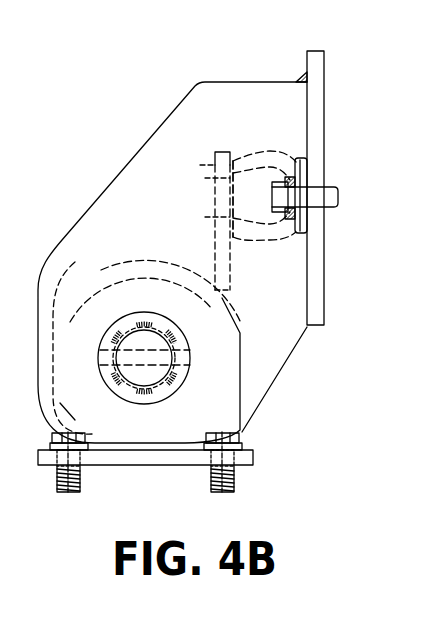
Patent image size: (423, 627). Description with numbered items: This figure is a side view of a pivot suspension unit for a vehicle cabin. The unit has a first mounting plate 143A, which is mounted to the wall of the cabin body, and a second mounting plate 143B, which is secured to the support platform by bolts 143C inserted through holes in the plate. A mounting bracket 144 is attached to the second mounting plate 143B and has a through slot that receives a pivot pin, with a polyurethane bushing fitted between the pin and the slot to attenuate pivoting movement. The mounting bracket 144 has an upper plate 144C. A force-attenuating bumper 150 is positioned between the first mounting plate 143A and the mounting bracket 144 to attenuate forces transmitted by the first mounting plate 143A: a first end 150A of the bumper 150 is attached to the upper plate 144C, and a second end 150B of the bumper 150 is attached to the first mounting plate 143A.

The first mounting plate 143A is at (324, 258).
The second mounting plate 143B is at (145, 465).
The bolts 143C is at (240, 437).
The mounting bracket 144 is at (87, 298).
The upper plate 144C is at (215, 150).
The force-attenuating bumper 150 is at (253, 160).
The first end 150A is at (238, 248).
The second end 150B is at (295, 148).